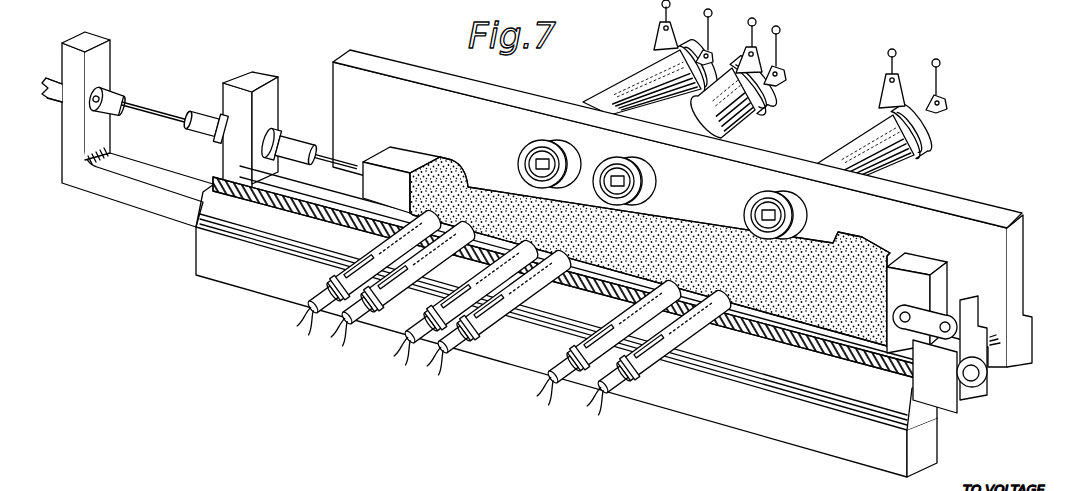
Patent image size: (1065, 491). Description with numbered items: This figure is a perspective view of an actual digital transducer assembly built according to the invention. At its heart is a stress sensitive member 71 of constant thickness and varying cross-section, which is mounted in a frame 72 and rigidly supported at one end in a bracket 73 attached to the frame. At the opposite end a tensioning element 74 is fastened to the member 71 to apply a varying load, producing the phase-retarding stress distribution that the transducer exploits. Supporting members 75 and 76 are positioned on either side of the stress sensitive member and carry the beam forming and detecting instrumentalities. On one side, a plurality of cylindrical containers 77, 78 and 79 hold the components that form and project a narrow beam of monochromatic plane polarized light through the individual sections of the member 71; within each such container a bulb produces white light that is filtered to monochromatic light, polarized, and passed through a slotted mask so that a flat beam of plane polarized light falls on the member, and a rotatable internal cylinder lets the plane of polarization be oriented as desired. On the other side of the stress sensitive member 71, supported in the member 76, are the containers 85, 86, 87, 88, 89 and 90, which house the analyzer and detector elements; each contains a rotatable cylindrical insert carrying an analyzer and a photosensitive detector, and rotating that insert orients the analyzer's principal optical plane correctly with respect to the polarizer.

The stress sensitive member 71 is at (873, 249).
The frame 72 is at (137, 200).
The bracket 73 is at (970, 318).
The tensioning element 74 is at (158, 111).
The supporting member 75 is at (1020, 250).
The supporting member 76 is at (932, 441).
The cylindrical container 77 is at (840, 134).
The cylindrical container 78 is at (743, 125).
The cylindrical container 79 is at (631, 66).
The container 85 is at (653, 370).
The container 86 is at (611, 316).
The container 87 is at (505, 323).
The container 88 is at (476, 274).
The container 89 is at (402, 295).
The container 90 is at (373, 249).